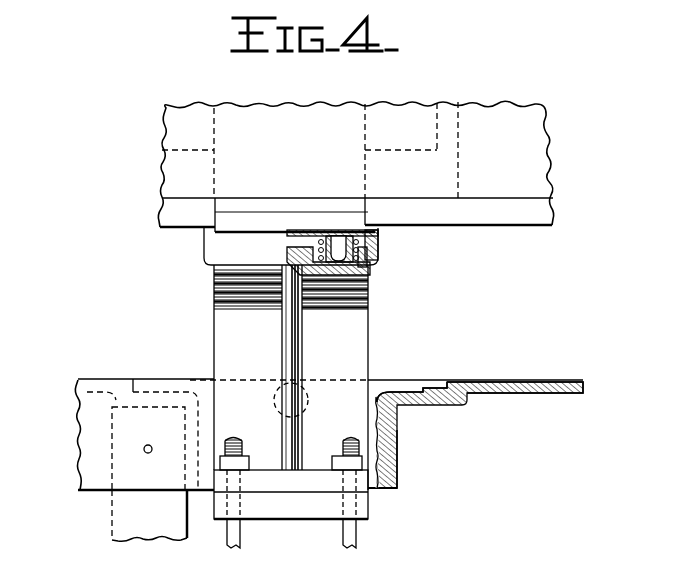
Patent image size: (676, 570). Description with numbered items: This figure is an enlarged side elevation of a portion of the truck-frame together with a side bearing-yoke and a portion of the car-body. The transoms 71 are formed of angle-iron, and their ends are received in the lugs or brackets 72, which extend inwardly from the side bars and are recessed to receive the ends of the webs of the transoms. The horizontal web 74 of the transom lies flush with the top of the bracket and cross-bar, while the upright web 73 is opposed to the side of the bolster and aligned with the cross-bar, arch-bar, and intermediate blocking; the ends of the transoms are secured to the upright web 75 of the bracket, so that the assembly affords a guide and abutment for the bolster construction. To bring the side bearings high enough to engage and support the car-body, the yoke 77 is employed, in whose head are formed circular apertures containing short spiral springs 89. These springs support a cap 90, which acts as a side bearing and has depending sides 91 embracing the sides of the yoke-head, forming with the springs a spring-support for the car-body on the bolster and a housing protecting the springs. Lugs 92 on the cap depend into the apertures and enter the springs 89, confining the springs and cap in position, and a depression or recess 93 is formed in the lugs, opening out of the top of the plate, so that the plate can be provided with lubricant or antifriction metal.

The transom 71 is at (475, 424).
The lug or bracket 72 is at (487, 393).
The upright web 73 is at (397, 441).
The horizontal web 74 is at (428, 388).
The upright web of the bracket 75 is at (397, 470).
The yoke 77 is at (274, 406).
The spiral spring 89 is at (370, 260).
The cap 90 is at (384, 241).
The depending side 91 is at (370, 268).
The lug 92 is at (335, 236).
The depression or recess 93 is at (343, 240).